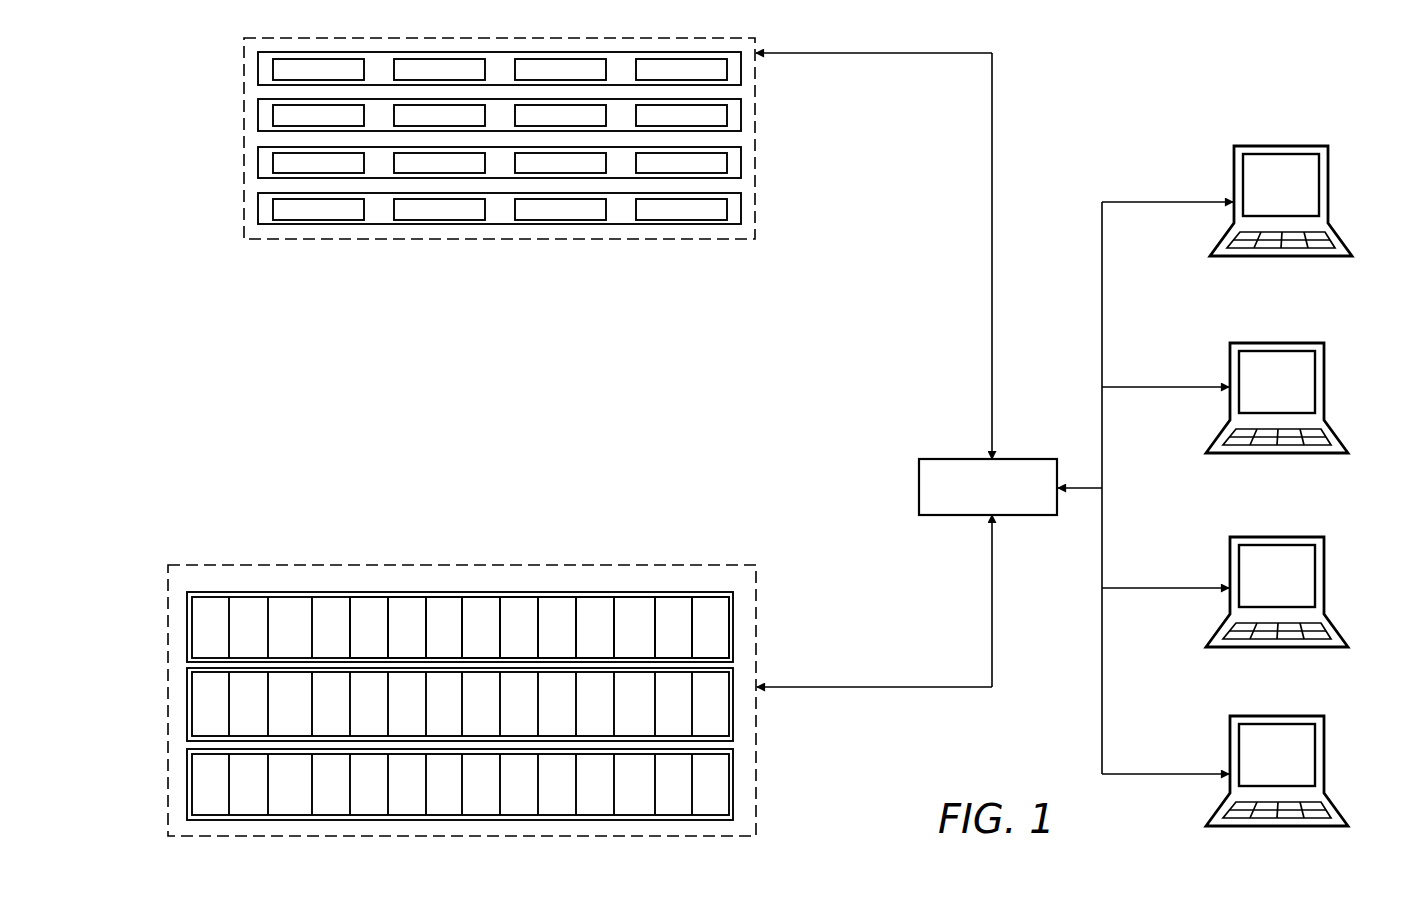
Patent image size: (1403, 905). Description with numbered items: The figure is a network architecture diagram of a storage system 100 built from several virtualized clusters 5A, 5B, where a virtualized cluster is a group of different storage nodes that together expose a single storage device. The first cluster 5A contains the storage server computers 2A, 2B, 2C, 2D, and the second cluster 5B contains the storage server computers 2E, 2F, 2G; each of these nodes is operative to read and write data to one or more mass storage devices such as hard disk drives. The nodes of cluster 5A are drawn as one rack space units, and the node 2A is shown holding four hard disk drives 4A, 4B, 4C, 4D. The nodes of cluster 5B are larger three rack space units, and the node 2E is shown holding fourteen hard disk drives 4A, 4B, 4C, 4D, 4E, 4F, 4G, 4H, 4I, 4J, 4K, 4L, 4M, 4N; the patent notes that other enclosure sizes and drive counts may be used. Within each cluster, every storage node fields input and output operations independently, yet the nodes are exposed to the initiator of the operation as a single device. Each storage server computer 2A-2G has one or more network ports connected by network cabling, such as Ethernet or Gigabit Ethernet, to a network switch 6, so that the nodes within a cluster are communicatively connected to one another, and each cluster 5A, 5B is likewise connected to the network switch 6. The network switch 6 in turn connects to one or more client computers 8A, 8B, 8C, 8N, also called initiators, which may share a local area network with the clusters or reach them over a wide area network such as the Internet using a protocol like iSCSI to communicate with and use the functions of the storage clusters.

The storage system 100 is at (994, 413).
The virtualized cluster 5A is at (499, 127).
The virtualized cluster 5B is at (462, 690).
The storage server computer 2A is at (741, 69).
The storage server computer 2B is at (741, 117).
The storage server computer 2C is at (741, 162).
The storage server computer 2D is at (741, 208).
The storage server computer 2E is at (733, 610).
The storage server computer 2F is at (733, 718).
The storage server computer 2G is at (733, 786).
The hard disk drive 4A is at (280, 349).
The hard disk drive 4B is at (360, 349).
The hard disk drive 4C is at (441, 349).
The hard disk drive 4D is at (523, 349).
The hard disk drive 4E is at (369, 627).
The hard disk drive 4F is at (407, 627).
The hard disk drive 4G is at (444, 627).
The hard disk drive 4H is at (481, 627).
The hard disk drive 4I is at (519, 627).
The hard disk drive 4J is at (557, 627).
The hard disk drive 4K is at (595, 627).
The hard disk drive 4L is at (634, 627).
The hard disk drive 4M is at (673, 627).
The hard disk drive 4N is at (710, 627).
The network switch 6 is at (988, 476).
The client computer 8A is at (1281, 191).
The client computer 8B is at (1277, 388).
The client computer 8C is at (1277, 581).
The client computer 8N is at (1277, 761).